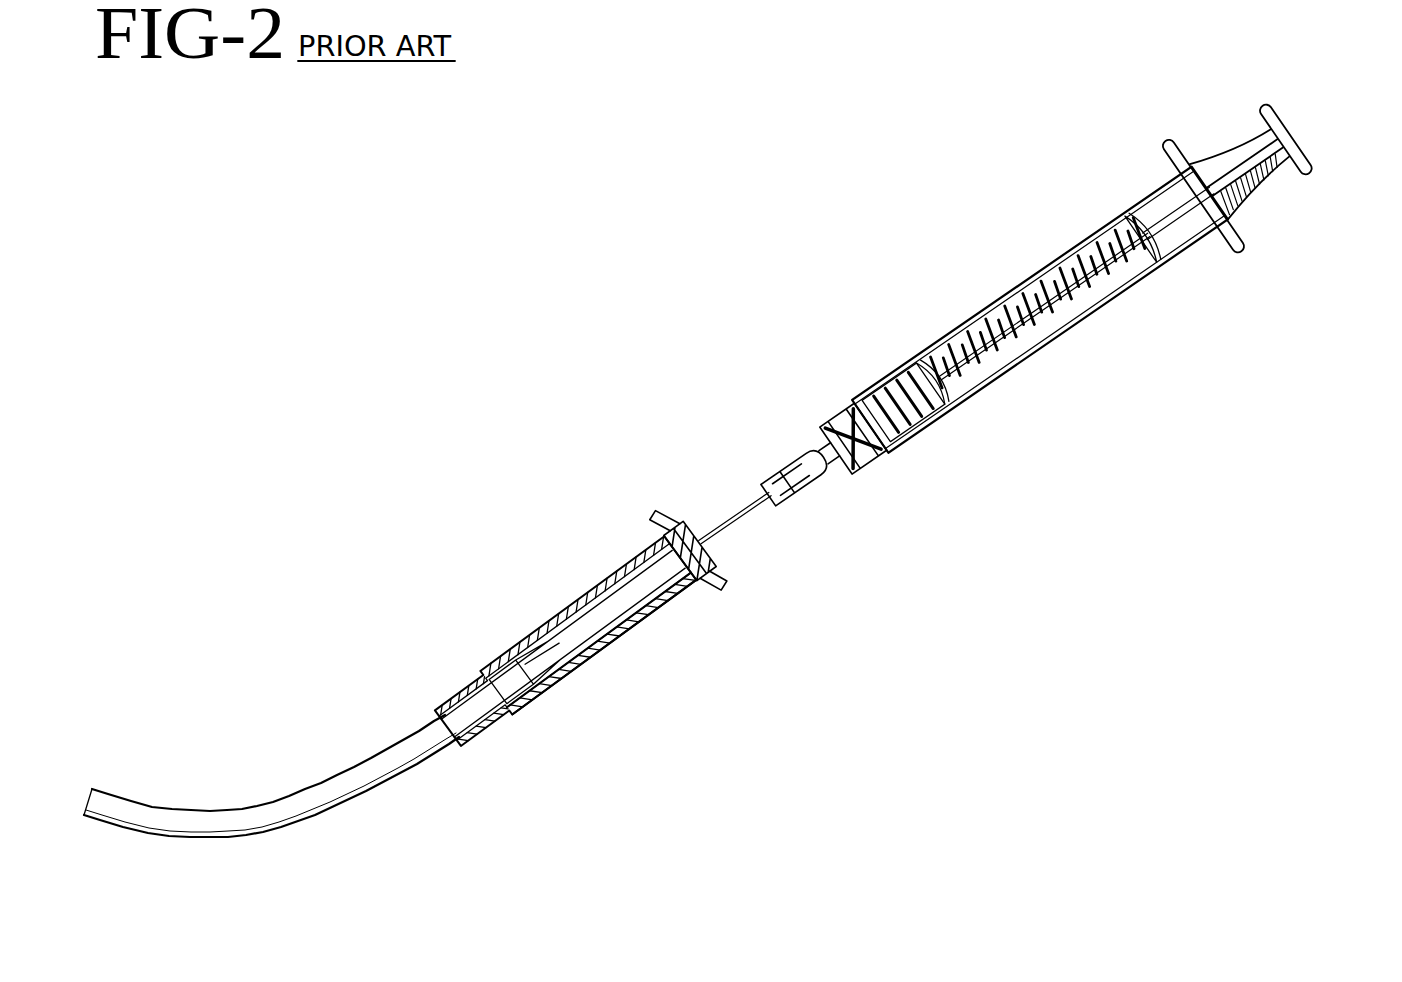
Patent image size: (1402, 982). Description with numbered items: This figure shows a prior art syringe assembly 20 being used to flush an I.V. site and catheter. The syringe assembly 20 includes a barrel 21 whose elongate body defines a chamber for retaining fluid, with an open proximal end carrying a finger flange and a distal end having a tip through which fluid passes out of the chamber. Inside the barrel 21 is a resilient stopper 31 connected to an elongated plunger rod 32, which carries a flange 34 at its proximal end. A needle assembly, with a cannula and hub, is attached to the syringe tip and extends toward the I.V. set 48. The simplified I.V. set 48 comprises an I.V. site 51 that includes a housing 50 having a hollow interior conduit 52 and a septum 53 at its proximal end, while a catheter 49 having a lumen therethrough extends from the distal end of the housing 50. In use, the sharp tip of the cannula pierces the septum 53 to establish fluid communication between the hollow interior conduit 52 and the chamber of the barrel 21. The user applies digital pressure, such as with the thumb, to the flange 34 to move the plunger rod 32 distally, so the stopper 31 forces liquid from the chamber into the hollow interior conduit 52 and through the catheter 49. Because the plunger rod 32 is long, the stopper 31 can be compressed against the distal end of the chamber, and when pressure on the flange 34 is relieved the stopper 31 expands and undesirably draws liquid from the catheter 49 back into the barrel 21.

The prior art syringe assembly 20 is at (1105, 308).
The barrel 21 is at (1124, 289).
The resilient stopper 31 is at (903, 424).
The plunger rod 32 is at (1251, 196).
The flange 34 is at (1304, 160).
The I.V. set 48 is at (463, 638).
The catheter 49 is at (381, 786).
The housing 50 is at (606, 647).
The I.V. site 51 is at (546, 684).
The hollow interior conduit 52 is at (524, 660).
The septum 53 is at (708, 561).